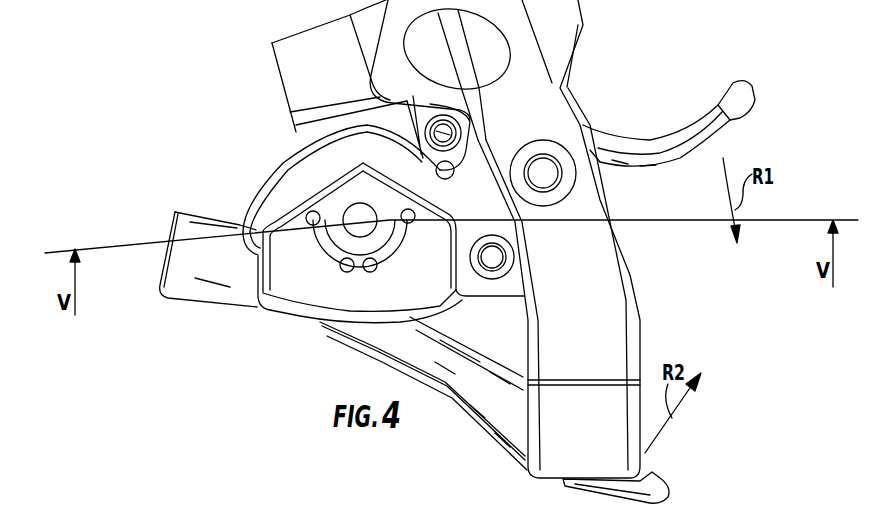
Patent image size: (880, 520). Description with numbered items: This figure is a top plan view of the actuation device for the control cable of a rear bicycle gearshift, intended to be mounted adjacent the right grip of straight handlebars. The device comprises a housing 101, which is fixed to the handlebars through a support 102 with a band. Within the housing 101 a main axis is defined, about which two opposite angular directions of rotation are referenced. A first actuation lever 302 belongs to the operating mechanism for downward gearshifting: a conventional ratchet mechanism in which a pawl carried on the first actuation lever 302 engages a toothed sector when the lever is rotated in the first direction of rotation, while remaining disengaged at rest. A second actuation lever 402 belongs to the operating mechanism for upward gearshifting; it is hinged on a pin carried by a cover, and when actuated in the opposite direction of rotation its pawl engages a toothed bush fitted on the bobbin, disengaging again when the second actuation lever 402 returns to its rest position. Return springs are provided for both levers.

The housing 101 is at (300, 175).
The support 102 is at (600, 247).
The first actuation lever 302 is at (692, 133).
The second actuation lever 402 is at (650, 477).